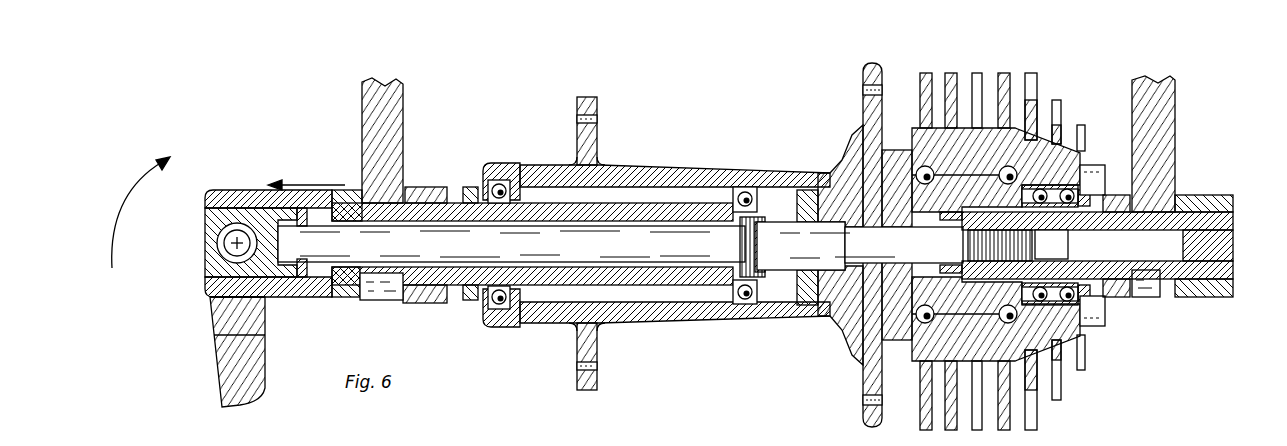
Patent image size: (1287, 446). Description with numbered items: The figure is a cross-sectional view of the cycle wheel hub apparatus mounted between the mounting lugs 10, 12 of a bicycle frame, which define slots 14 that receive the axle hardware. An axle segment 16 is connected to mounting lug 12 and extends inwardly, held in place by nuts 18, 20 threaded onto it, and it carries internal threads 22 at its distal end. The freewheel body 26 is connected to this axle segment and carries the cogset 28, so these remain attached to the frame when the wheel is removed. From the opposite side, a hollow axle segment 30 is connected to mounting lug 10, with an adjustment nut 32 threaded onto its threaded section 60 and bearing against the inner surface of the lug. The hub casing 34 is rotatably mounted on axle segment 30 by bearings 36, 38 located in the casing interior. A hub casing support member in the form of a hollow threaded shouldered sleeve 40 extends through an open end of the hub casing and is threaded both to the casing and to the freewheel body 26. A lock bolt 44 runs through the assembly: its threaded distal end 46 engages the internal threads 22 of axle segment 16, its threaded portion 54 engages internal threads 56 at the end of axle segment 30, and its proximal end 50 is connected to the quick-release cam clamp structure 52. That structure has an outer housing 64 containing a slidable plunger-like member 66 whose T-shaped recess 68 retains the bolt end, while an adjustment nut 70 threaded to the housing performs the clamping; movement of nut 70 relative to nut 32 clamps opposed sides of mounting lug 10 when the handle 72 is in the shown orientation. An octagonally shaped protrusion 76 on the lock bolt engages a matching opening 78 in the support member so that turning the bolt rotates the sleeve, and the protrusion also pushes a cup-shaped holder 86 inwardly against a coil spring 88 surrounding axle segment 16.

The mounting lug 10 is at (364, 122).
The mounting lug 12 is at (1172, 136).
The slots 14 is at (383, 300).
The axle segment 16 is at (1114, 214).
The nut 18 is at (1118, 298).
The nut 20 is at (1222, 195).
The internal threads 22 is at (1018, 237).
The freewheel body 26 is at (898, 158).
The cogset 28 is at (1013, 84).
The axle segment 30 is at (455, 203).
The adjustment nut 32 is at (432, 303).
The hub casing 34 is at (634, 170).
The bearing 36 is at (498, 165).
The bearing 38 is at (748, 306).
The hollow threaded shouldered sleeve 40 is at (806, 308).
The lock bolt 44 is at (633, 233).
The threaded distal end 46 is at (932, 256).
The proximal end 50 is at (324, 256).
The quick-release cam clamp structure 52 is at (212, 311).
The threaded portion 54 is at (746, 241).
The internal threads 56 is at (760, 248).
The threaded section 60 is at (428, 188).
The outer housing 64 is at (221, 192).
The plunger-like member 66 is at (262, 212).
The recess 68 is at (298, 278).
The adjustment nut 70 is at (342, 290).
The handle 72 is at (256, 362).
The octagonally shaped protrusion 76 is at (922, 234).
The opening 78 is at (826, 176).
The holder 86 is at (970, 212).
The coil spring 88 is at (1012, 330).